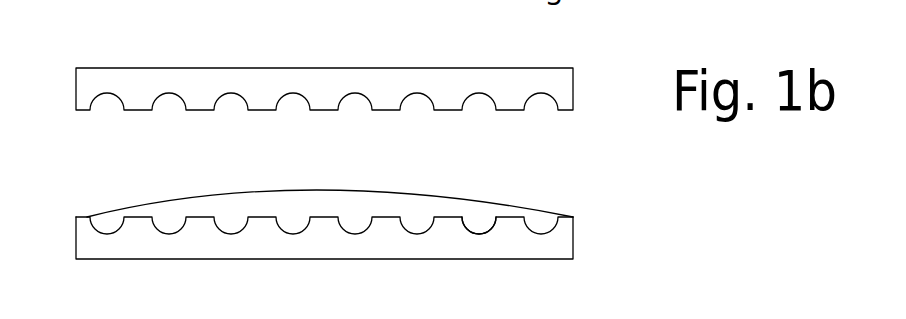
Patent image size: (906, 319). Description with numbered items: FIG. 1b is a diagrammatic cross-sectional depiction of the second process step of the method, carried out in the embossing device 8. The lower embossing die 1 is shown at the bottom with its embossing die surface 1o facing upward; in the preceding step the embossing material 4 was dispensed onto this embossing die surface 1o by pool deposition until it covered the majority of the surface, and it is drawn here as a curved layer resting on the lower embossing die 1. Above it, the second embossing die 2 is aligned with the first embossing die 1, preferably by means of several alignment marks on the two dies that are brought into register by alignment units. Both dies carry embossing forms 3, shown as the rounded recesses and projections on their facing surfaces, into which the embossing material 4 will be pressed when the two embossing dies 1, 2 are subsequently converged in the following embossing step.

The embossing device 8 is at (105, 53).
The second embossing die 2 is at (557, 95).
The lower embossing die 1 is at (562, 238).
The embossing die surface 1o is at (510, 219).
The embossing forms 3 is at (492, 230).
The embossing material 4 is at (455, 197).